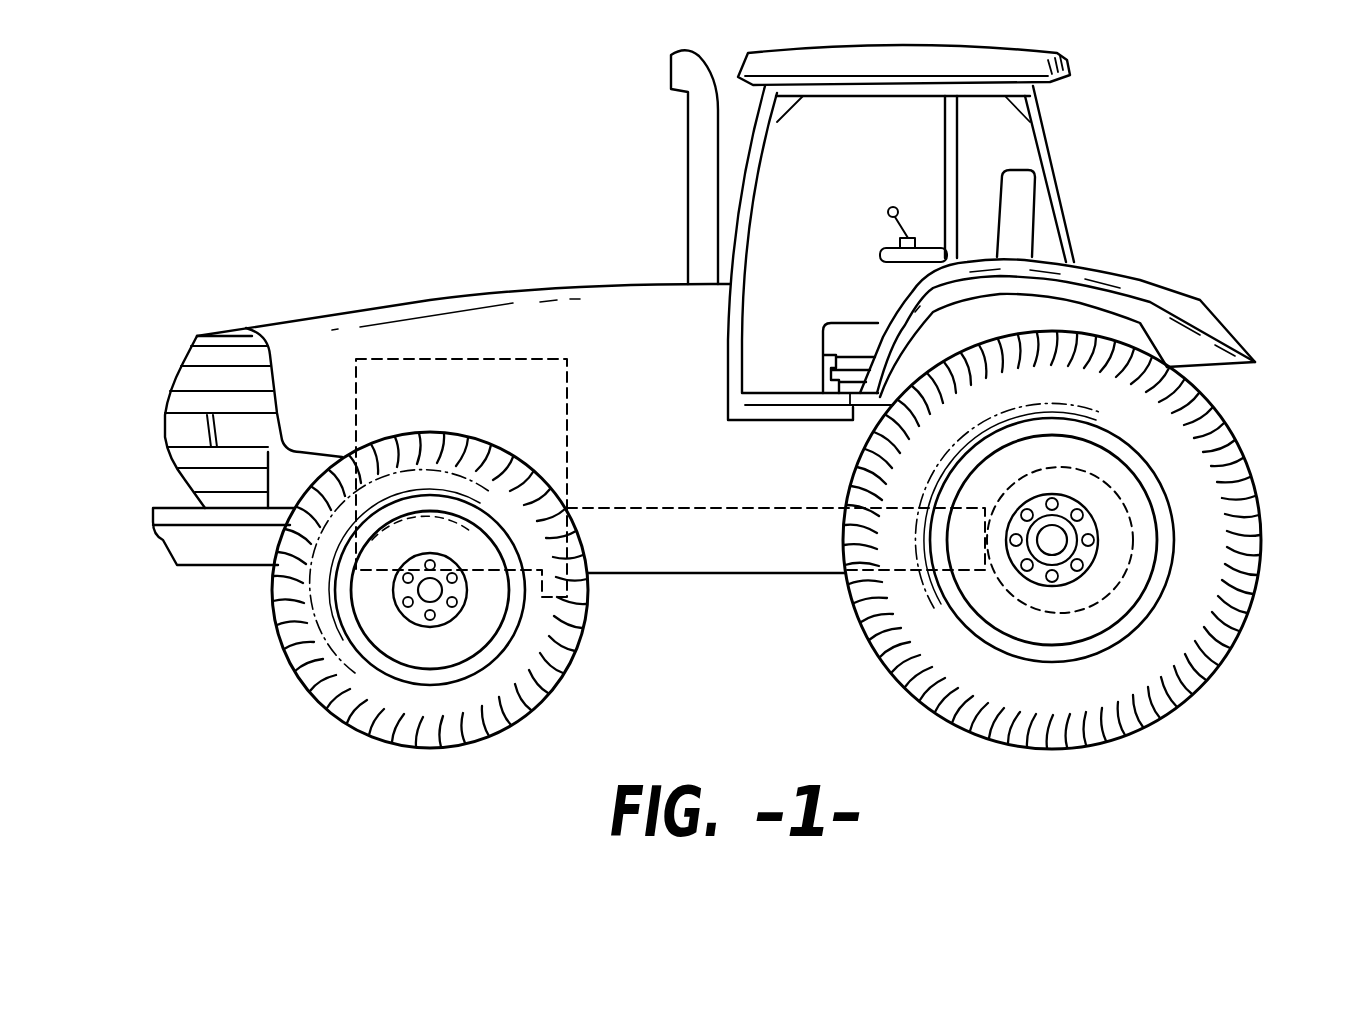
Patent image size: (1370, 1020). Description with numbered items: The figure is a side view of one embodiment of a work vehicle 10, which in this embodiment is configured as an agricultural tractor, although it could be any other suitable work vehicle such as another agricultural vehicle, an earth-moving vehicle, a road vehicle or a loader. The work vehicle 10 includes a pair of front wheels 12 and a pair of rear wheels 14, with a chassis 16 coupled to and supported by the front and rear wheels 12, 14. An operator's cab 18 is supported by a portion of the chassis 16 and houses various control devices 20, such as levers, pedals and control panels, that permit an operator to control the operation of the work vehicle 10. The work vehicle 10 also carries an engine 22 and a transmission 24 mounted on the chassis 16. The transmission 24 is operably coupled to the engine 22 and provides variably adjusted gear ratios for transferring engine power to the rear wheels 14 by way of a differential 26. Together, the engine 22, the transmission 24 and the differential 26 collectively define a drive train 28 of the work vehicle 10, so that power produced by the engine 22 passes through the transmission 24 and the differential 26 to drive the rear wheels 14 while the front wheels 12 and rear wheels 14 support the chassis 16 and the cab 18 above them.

The work vehicle 10 is at (352, 180).
The front wheels 12 is at (272, 610).
The rear wheels 14 is at (1283, 570).
The chassis 16 is at (661, 577).
The operator's cab 18 is at (1062, 182).
The control devices 20 is at (891, 206).
The engine 22 is at (432, 359).
The transmission 24 is at (727, 507).
The differential 26 is at (1140, 542).
The drive train 28 is at (627, 312).